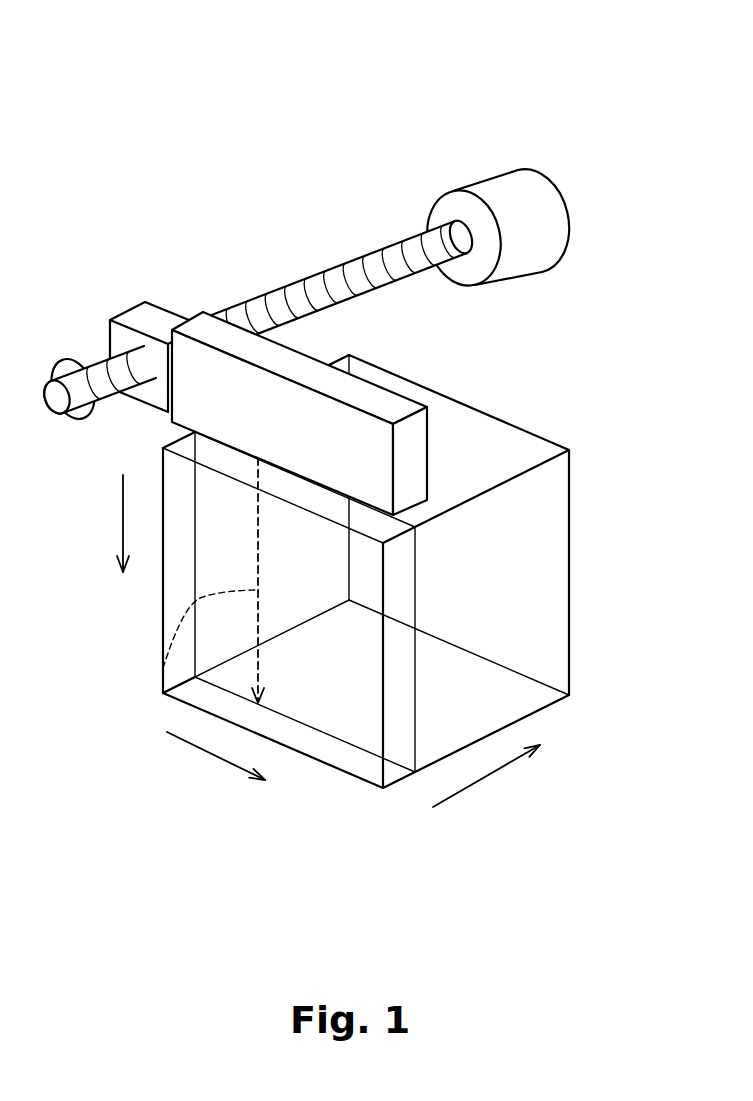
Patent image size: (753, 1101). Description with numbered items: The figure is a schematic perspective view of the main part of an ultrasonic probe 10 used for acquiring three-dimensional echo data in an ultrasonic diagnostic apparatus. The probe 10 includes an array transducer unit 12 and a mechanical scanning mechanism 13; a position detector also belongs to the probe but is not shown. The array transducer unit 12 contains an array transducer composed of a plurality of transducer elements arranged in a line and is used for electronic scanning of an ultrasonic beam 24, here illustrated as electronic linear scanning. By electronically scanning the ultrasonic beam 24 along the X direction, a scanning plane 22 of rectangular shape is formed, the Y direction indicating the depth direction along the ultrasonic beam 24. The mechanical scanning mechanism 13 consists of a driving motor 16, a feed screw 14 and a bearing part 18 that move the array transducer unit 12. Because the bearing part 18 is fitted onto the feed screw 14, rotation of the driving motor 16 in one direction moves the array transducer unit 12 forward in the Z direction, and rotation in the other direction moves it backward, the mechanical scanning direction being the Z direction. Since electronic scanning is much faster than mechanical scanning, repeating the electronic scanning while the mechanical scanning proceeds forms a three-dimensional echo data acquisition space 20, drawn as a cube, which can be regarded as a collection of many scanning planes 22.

The ultrasonic probe 10 is at (229, 112).
The array transducer unit 12 is at (205, 330).
The mechanical scanning mechanism 13 is at (320, 210).
The feed screw 14 is at (380, 257).
The driving motor 16 is at (503, 193).
The bearing part 18 is at (140, 315).
The three-dimensional echo data acquisition space 20 is at (555, 400).
The scanning plane 22 is at (365, 770).
The ultrasonic beam 24 is at (163, 668).